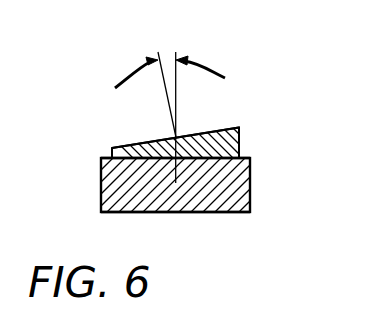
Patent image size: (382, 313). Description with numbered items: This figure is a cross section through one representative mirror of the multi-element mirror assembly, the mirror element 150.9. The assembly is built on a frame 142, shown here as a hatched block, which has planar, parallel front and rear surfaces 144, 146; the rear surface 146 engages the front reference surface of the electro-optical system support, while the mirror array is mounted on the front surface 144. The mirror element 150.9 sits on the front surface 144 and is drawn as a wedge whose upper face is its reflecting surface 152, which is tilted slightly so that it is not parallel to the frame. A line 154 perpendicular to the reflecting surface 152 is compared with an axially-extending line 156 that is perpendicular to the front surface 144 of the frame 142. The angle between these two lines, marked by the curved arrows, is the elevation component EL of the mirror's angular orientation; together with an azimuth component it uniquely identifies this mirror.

The frame 142 is at (101, 176).
The front surface 144 is at (243, 157).
The rear surface 146 is at (227, 212).
The mirror element 150.9 is at (241, 137).
The reflecting surface 152 is at (132, 147).
The line perpendicular to the reflecting surface 154 is at (158, 54).
The axially-extending line 156 is at (176, 55).
The elevation angle EL is at (185, 76).